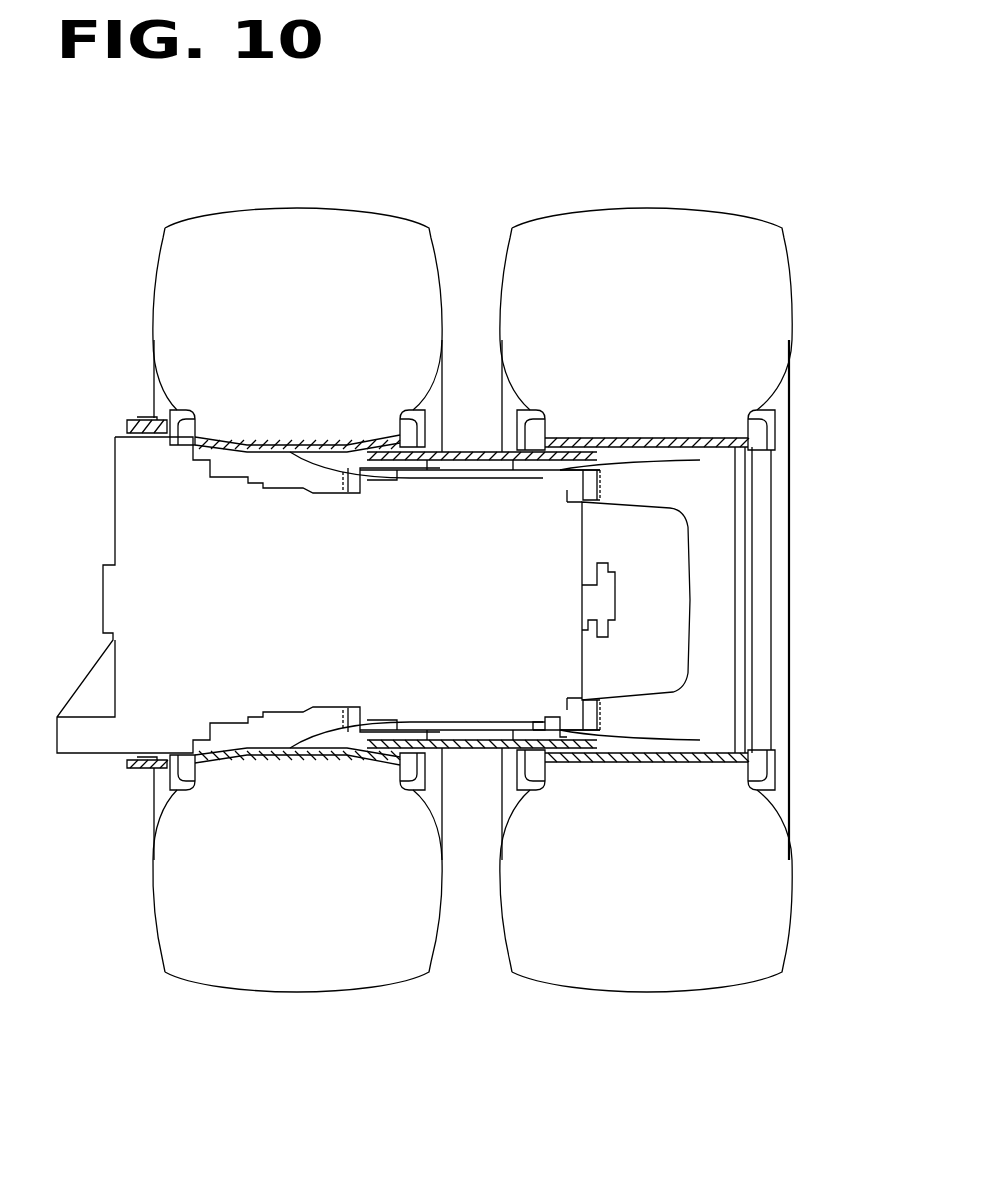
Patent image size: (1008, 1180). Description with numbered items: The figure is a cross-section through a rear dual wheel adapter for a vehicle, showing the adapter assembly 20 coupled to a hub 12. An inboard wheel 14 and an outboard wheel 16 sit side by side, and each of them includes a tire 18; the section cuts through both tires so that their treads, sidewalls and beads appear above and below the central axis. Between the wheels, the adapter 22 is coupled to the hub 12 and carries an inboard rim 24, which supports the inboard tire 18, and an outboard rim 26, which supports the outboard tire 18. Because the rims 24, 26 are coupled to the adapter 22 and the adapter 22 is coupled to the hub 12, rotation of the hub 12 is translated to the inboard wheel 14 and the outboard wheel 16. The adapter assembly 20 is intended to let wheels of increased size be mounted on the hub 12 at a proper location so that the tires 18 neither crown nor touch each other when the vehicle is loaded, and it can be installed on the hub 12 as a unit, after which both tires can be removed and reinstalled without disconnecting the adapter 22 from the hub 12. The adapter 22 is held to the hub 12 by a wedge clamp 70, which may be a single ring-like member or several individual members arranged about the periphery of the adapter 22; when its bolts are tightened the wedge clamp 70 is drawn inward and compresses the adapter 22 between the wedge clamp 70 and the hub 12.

The hub 12 is at (693, 568).
The inboard wheel 14 is at (160, 212).
The outboard wheel 16 is at (810, 200).
The tire 18 is at (240, 207).
The adapter assembly 20 is at (485, 192).
The adapter 22 is at (470, 438).
The inboard rim 24 is at (138, 407).
The outboard rim 26 is at (797, 407).
The wedge clamp 70 is at (545, 710).